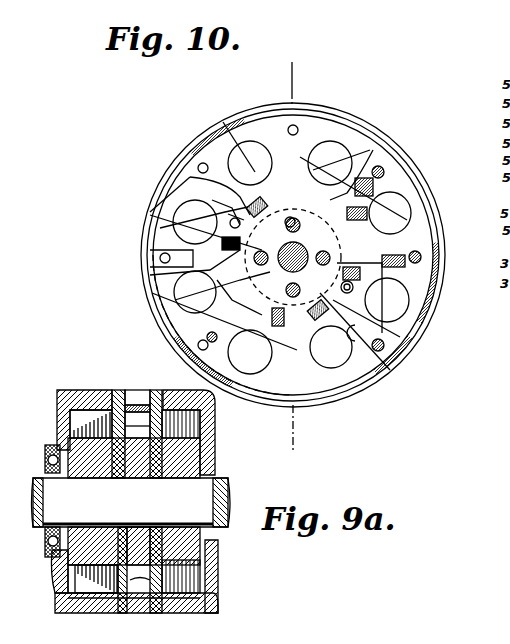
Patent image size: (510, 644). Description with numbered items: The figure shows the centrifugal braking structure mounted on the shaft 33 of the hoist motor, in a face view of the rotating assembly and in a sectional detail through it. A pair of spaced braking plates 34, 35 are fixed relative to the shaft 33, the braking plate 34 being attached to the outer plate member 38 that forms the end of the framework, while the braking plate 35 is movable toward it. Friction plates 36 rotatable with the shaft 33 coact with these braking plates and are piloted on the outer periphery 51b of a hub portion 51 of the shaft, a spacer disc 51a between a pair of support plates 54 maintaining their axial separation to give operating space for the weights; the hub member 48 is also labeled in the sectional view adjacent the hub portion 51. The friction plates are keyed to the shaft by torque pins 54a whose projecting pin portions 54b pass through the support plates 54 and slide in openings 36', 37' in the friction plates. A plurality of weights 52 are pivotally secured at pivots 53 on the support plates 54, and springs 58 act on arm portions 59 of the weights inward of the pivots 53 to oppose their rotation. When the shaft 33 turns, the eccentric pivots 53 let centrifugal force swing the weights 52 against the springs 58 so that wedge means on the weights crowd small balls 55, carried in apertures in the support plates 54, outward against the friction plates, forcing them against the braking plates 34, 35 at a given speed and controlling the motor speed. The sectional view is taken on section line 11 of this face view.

In FIG. 10, the section line 11- 11 is at (292, 73).
In FIG. 10, the shaft 33 is at (293, 257).
In FIG. 9A, the shaft 33 is at (256, 488).
In FIG. 9A, the braking plate 34 is at (90, 390).
In FIG. 10, the braking plate 35 is at (385, 158).
In FIG. 9A, the braking plate 35 is at (210, 612).
In FIG. 10, the friction plate 36 is at (182, 253).
In FIG. 9A, the friction plate 36 is at (108, 479).
In FIG. 10, the opening 36' is at (172, 255).
In FIG. 9A, the opening 36' is at (111, 488).
In FIG. 9A, the opening 37' is at (172, 602).
In FIG. 9A, the outer plate member 38 is at (62, 392).
In FIG. 9A, the hub 48 is at (205, 468).
In FIG. 9A, the hub portion 51 is at (180, 546).
In FIG. 9A, the spacer disc 51a is at (133, 524).
In FIG. 9A, the outer periphery of hub portion 51b is at (80, 430).
In FIG. 10, the weight 52 is at (235, 120).
In FIG. 10, the pivot 53 is at (200, 166).
In FIG. 9A, the support plate 54 is at (195, 447).
In FIG. 10, the torque pin 54a is at (215, 200).
In FIG. 9A, the torque pin 54a is at (135, 390).
In FIG. 10, the projecting pin portion 54b is at (230, 215).
In FIG. 9A, the projecting pin portion 54b is at (160, 392).
In FIG. 10, the ball 55 is at (405, 358).
In FIG. 10, the spring 58 is at (185, 257).
In FIG. 10, the arm portion 59 is at (200, 305).